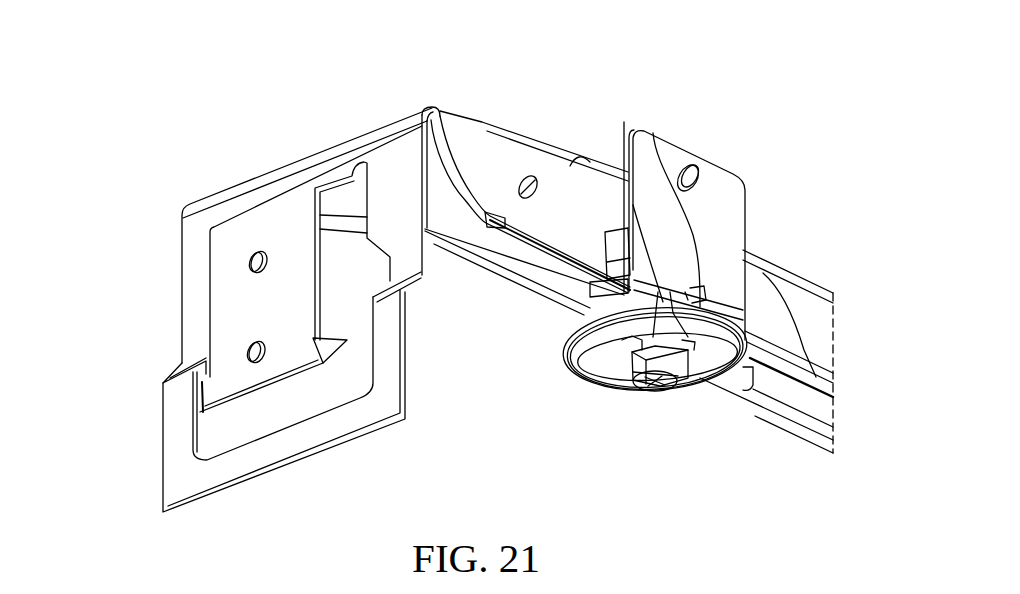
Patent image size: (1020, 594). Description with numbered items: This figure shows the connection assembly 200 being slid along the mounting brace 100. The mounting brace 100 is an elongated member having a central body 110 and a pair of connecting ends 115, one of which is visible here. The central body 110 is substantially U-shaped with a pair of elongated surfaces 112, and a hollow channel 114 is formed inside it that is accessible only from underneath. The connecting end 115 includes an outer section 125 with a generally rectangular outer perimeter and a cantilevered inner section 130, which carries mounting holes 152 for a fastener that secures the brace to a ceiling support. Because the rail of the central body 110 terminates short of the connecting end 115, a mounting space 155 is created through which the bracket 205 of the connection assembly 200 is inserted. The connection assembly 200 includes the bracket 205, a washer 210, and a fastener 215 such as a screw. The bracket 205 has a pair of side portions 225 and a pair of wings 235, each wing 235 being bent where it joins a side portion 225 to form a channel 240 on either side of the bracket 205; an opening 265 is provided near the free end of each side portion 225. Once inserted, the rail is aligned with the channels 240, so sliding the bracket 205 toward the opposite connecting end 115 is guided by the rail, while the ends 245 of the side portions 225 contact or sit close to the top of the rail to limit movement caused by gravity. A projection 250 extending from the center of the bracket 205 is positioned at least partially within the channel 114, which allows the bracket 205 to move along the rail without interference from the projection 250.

The mounting brace 100 is at (145, 45).
The connecting end 115 is at (272, 127).
The inner section 130 is at (250, 305).
The mounting holes 152 is at (250, 262).
The outer section 125 is at (170, 466).
The elongated surface 112 is at (498, 148).
The channel 114 is at (483, 243).
The mounting space 155 is at (553, 234).
The channel 240 is at (630, 130).
The opening 265 is at (602, 232).
The connection assembly 200 is at (712, 103).
The wing 235 is at (652, 130).
The bracket 205 is at (714, 208).
The side portion 225 is at (730, 192).
The end 245 is at (720, 255).
The washer 210 is at (602, 373).
The fastener 215 is at (655, 393).
The projection 250 is at (752, 388).
The central body 110 is at (806, 312).